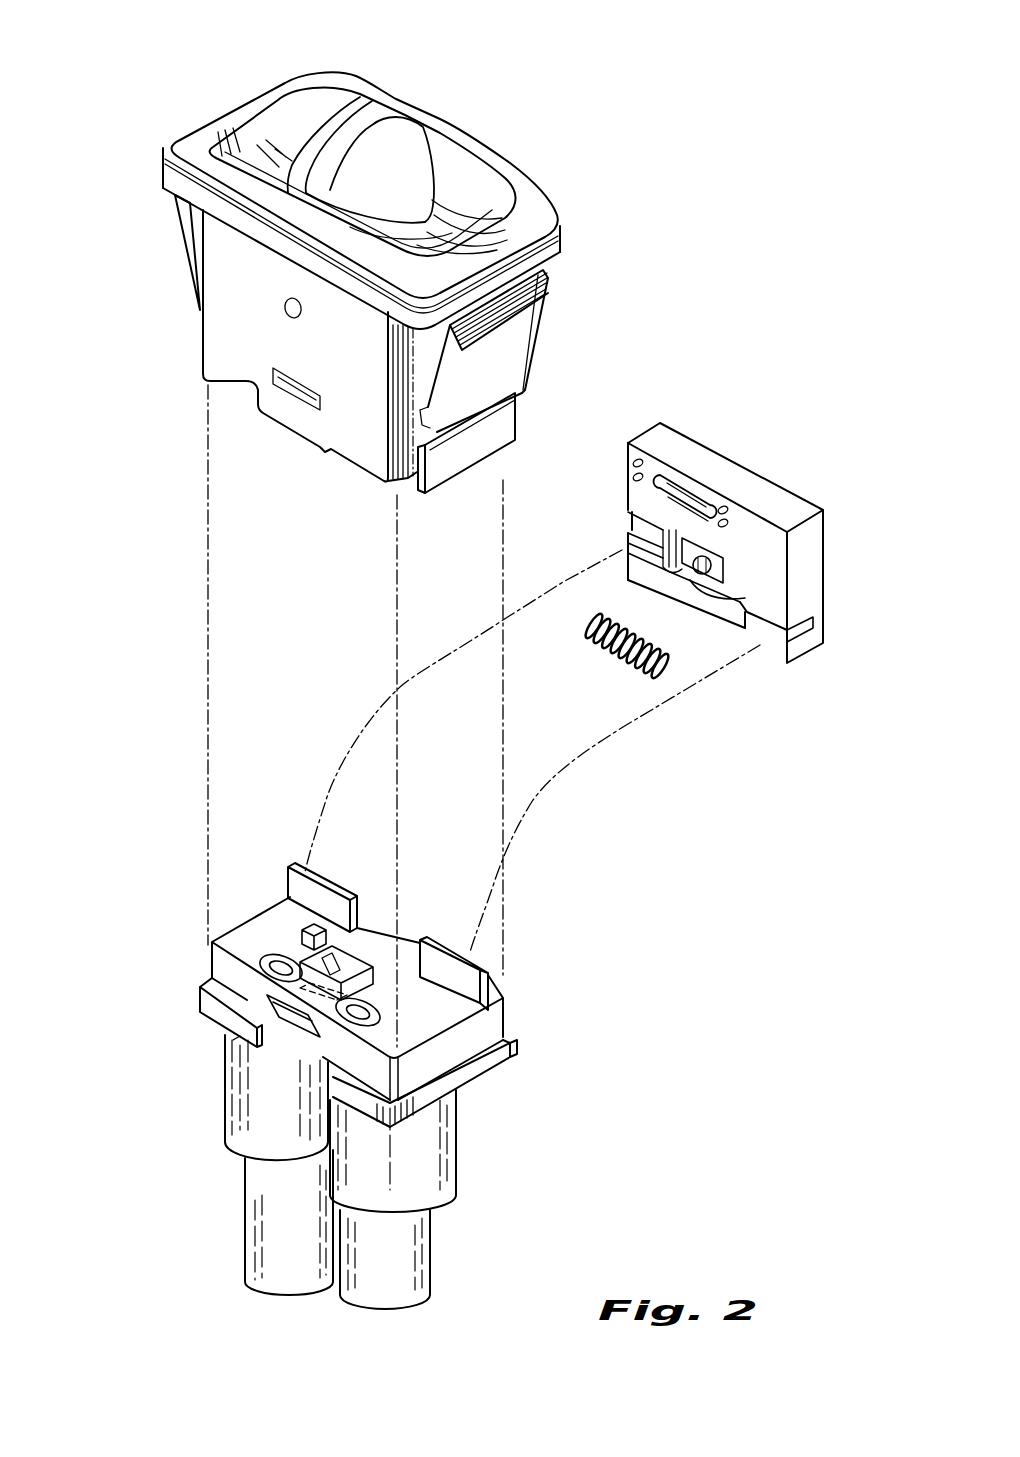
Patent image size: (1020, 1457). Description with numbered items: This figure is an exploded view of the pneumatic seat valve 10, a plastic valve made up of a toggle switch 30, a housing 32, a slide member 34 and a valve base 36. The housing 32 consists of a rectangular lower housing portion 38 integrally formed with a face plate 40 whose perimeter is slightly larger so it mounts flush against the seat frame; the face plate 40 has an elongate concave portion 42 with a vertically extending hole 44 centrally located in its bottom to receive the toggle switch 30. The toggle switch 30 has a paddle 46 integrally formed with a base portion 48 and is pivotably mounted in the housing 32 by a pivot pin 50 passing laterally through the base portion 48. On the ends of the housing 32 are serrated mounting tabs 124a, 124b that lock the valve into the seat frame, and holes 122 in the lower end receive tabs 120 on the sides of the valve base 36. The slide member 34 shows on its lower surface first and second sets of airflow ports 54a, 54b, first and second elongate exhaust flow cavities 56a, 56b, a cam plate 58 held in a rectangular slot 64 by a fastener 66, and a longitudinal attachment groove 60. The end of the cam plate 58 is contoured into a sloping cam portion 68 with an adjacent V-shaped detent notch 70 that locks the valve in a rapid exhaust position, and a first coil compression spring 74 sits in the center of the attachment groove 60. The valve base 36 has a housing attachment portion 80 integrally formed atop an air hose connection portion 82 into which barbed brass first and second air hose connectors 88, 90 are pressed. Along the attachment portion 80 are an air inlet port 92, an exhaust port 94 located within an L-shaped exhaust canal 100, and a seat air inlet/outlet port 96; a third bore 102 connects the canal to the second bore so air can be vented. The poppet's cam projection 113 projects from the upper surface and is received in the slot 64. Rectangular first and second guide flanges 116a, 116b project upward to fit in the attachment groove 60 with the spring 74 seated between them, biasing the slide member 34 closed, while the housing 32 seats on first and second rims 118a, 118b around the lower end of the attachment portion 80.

The seat valve 10 is at (172, 90).
The toggle switch 30 is at (382, 117).
The housing 32 is at (547, 190).
The slide member 34 is at (752, 463).
The valve base 36 is at (460, 1120).
The lower housing portion 38 is at (220, 357).
The face plate 40 is at (533, 226).
The concave portion 42 is at (283, 113).
The hole 44 is at (452, 215).
The paddle 46 is at (343, 110).
The base portion 48 is at (427, 222).
The pivot pin 50 is at (284, 310).
The first set of airflow ports 54a is at (636, 466).
The second set of airflow ports 54b is at (725, 510).
The first elongate exhaust flow cavity 56a is at (662, 478).
The second elongate exhaust flow cavity 56b is at (677, 478).
The cam plate 58 is at (683, 553).
The attachment groove 60 is at (808, 620).
The slot 64 is at (630, 520).
The fastener 66 is at (726, 572).
The cam portion 68 is at (660, 538).
The detent notch 70 is at (673, 553).
The first coil compression spring 74 is at (612, 655).
The housing attachment portion 80 is at (283, 898).
The air hose connection portion 82 is at (460, 1170).
The first air hose connector 88 is at (432, 1277).
The second air hose connector 90 is at (243, 1250).
The air inlet port 92 is at (315, 1040).
The exhaust port 94 is at (233, 1040).
The seat air inlet/outlet port 96 is at (270, 968).
The exhaust canal 100 is at (360, 950).
The third bore 102 is at (328, 947).
The cam projection 113 is at (306, 930).
The first guide flange 116a is at (298, 866).
The second guide flange 116b is at (487, 963).
The first rim 118a is at (200, 1000).
The second rim 118b is at (515, 1045).
The tabs 120 is at (300, 1000).
The holes 122 is at (296, 402).
The first mounting tab 124a is at (180, 222).
The second mounting tab 124b is at (532, 360).